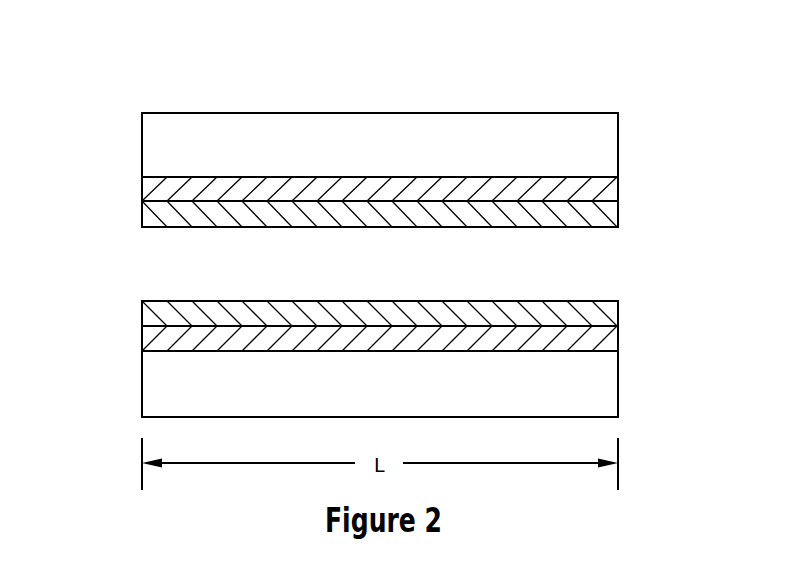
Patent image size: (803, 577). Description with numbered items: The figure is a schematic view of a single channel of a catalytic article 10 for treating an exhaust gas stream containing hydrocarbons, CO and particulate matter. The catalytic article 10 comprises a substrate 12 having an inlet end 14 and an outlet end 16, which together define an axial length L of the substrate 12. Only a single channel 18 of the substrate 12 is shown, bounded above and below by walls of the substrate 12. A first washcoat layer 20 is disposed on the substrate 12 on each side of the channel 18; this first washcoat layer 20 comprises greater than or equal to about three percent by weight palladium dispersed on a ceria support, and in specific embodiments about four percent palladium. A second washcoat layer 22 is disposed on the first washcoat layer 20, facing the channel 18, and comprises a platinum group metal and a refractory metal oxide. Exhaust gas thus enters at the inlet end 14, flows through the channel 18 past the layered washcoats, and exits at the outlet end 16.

The catalytic article 10 is at (158, 65).
The substrate 12 is at (393, 158).
The inlet end 14 is at (128, 268).
The outlet end 16 is at (630, 277).
The channel 18 is at (394, 274).
The first washcoat layer 20 is at (618, 189).
The second washcoat layer 22 is at (618, 220).